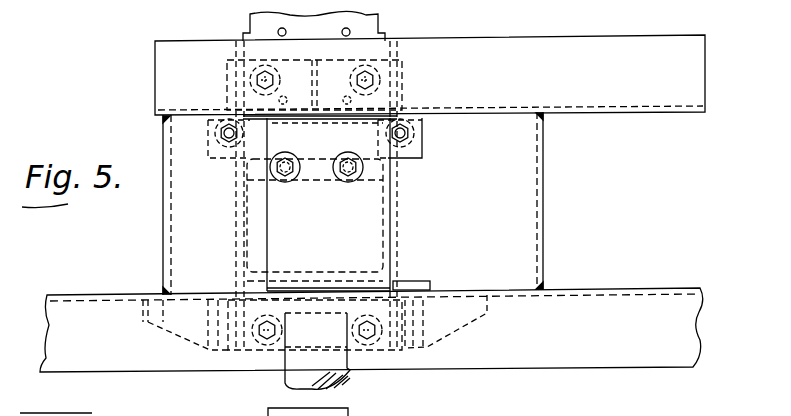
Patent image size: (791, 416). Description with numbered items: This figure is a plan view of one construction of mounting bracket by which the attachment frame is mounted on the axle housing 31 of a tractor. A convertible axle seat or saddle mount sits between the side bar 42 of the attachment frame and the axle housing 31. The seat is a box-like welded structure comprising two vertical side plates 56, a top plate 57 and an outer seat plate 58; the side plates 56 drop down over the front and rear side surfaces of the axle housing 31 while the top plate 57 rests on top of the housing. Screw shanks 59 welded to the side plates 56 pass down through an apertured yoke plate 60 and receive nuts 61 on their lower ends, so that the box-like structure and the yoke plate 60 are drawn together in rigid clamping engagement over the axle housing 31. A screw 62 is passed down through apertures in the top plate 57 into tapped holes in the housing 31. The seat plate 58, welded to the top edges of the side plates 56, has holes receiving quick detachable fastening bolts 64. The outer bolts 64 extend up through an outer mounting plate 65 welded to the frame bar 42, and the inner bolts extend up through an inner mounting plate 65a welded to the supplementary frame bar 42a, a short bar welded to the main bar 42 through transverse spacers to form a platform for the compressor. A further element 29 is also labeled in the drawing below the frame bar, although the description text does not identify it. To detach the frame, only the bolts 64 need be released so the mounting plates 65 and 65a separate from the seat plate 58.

The supplementary frame bar 42a is at (627, 110).
The inner mounting plate 65a is at (356, 62).
The outer seat plate 58 is at (228, 72).
The quick detachable fastening bolt 64 is at (362, 76).
The axle housing 31 is at (378, 218).
The top plate 57 is at (326, 237).
The screw 62 is at (338, 178).
The screw shank 59 is at (214, 133).
The nut 61 is at (225, 153).
The yoke plate 60 is at (414, 158).
The vertical side plate 56 is at (245, 240).
The side bar 42 is at (611, 300).
The outer mounting plate 65 is at (190, 335).
The anchor rod 29 is at (292, 380).